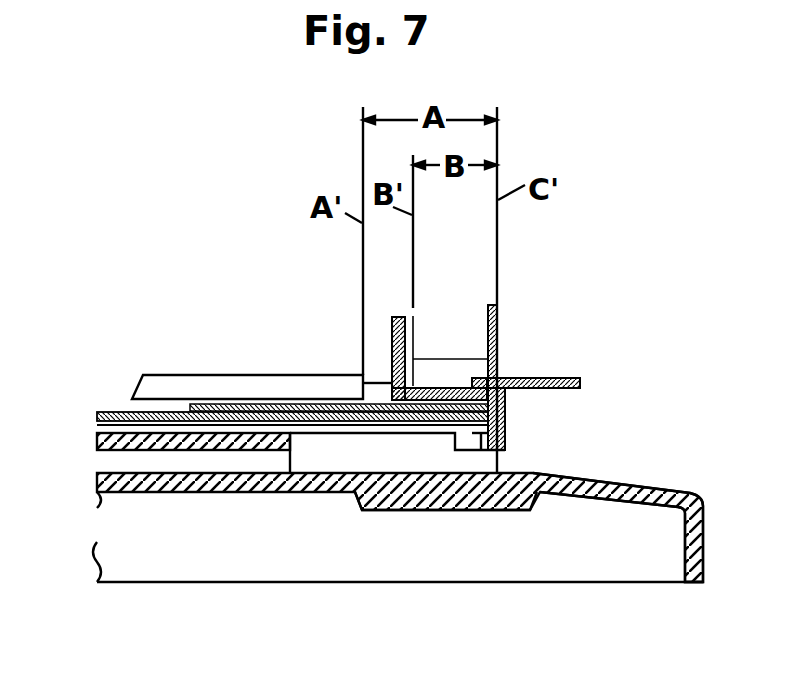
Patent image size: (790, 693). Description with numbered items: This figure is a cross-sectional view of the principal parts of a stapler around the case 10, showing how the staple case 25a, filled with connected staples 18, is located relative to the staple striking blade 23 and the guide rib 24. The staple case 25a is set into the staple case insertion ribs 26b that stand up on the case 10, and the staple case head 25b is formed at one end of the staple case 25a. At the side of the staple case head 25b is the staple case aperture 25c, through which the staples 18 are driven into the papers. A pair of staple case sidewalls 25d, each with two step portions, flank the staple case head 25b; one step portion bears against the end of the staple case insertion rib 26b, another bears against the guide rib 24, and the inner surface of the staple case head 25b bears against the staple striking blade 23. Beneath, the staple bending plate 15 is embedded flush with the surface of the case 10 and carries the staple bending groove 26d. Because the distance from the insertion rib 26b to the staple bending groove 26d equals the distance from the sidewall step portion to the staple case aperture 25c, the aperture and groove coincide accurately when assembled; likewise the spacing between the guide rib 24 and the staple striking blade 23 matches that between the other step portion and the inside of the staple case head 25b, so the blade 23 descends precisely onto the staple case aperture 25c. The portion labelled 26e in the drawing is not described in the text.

The case 10 is at (398, 560).
The staple bending plate 15 is at (518, 507).
The staples 18 is at (227, 406).
The staple striking blade 23 is at (498, 318).
The guide rib 24 is at (417, 333).
The staple case 25a is at (123, 412).
The staple case head 25b is at (578, 380).
The staple case aperture 25c is at (492, 437).
The staple case sidewalls 25d is at (475, 370).
The staple case insertion ribs 26b is at (305, 375).
The staple bending groove 26d is at (473, 507).
The upper wall of housing 26e is at (197, 443).